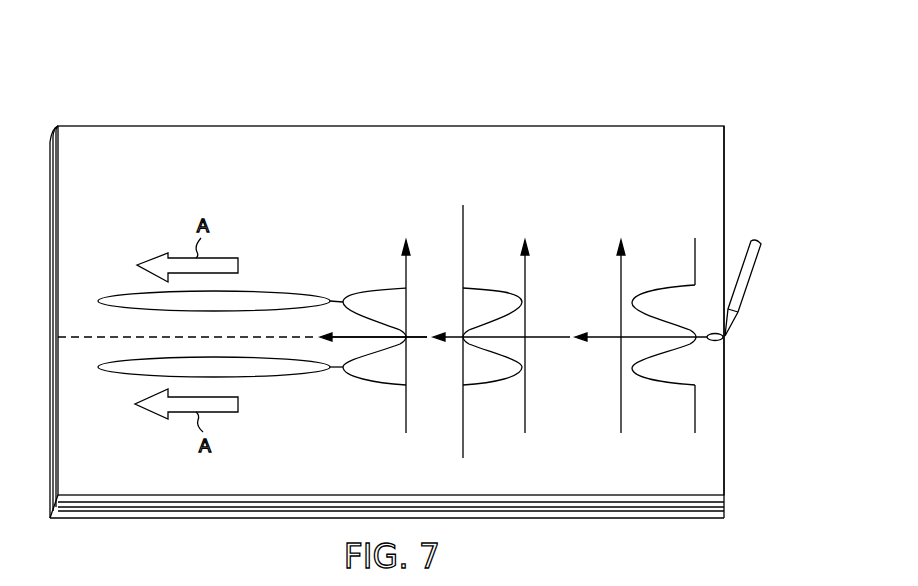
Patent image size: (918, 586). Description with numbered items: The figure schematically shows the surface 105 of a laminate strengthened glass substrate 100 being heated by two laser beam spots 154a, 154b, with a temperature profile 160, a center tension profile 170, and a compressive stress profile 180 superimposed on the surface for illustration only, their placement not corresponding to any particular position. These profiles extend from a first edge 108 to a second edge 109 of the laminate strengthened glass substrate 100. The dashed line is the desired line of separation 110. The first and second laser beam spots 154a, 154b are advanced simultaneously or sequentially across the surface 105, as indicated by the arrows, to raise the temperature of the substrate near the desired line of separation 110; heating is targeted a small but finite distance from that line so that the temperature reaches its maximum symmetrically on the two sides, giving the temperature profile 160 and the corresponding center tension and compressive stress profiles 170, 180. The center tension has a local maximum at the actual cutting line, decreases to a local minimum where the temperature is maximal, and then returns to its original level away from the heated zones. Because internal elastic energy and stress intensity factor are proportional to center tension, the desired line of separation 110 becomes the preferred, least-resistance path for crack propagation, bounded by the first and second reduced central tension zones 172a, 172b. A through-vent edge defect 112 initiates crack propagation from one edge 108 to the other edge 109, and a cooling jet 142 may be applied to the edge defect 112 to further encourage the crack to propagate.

The laminate strengthened glass substrate 100 is at (716, 107).
The surface 105 is at (229, 188).
The first edge 108 is at (725, 441).
The second edge 109 is at (147, 503).
The desired line of separation 110 is at (91, 336).
The through-vent edge defect 112 is at (723, 340).
The cooling jet 142 is at (757, 241).
The first laser beam spot 154a is at (126, 378).
The second laser beam spot 154b is at (267, 292).
The temperature profile 160 is at (378, 265).
The center tension profile 170 is at (488, 255).
The first reduced central tension zone 172a is at (337, 382).
The second reduced central tension zone 172b is at (336, 288).
The compressive stress profile 180 is at (672, 262).